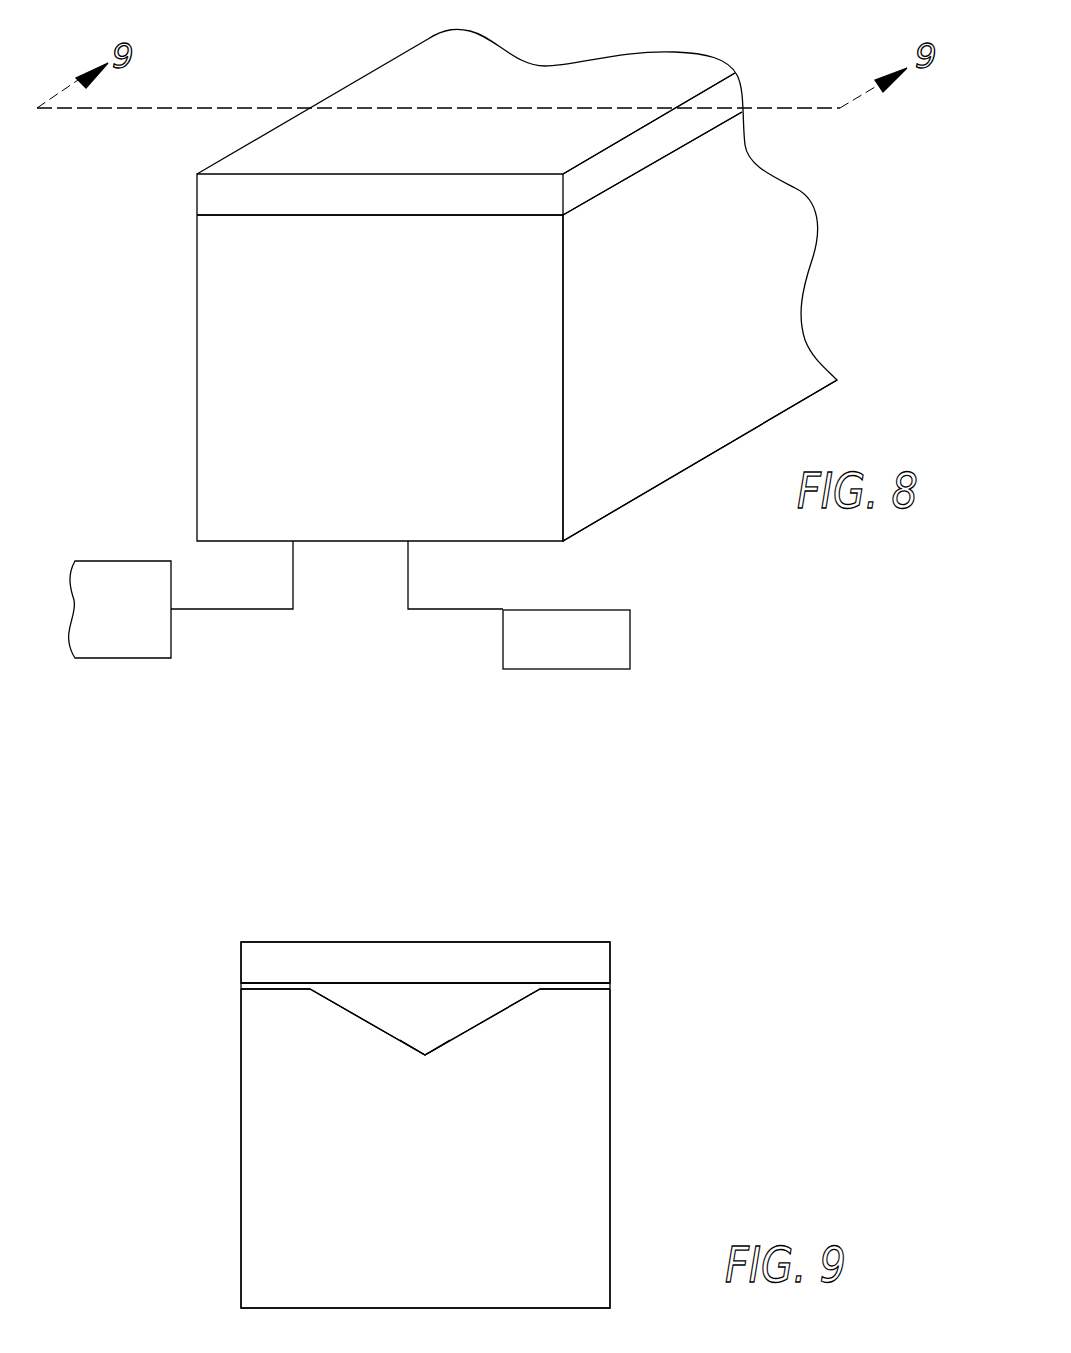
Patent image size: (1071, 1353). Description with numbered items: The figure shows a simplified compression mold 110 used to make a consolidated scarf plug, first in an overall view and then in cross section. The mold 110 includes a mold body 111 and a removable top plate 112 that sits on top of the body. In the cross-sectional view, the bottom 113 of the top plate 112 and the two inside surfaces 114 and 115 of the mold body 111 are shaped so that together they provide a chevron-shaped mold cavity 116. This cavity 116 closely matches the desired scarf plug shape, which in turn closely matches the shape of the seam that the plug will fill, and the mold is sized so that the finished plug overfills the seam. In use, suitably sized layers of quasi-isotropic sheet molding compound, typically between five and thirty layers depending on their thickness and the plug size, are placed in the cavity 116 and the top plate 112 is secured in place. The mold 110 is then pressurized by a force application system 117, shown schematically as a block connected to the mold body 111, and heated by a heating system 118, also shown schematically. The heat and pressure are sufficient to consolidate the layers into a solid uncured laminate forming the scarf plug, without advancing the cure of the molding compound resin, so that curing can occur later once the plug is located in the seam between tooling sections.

In FIG. 8, the compression mold 110 is at (344, 46).
In FIG. 9, the compression mold 110 is at (664, 1057).
In FIG. 8, the mold body 111 is at (620, 470).
In FIG. 9, the mold body 111 is at (582, 1203).
In FIG. 8, the removable top plate 112 is at (557, 75).
In FIG. 9, the removable top plate 112 is at (538, 953).
In FIG. 9, the bottom of the top plate 113 is at (417, 987).
In FIG. 9, the inside surface 114 is at (336, 1003).
In FIG. 9, the inside surface 115 is at (485, 1018).
In FIG. 9, the chevron-shaped mold cavity 116 is at (418, 1028).
In FIG. 8, the force application system 117 is at (118, 648).
In FIG. 8, the heating system 118 is at (614, 642).